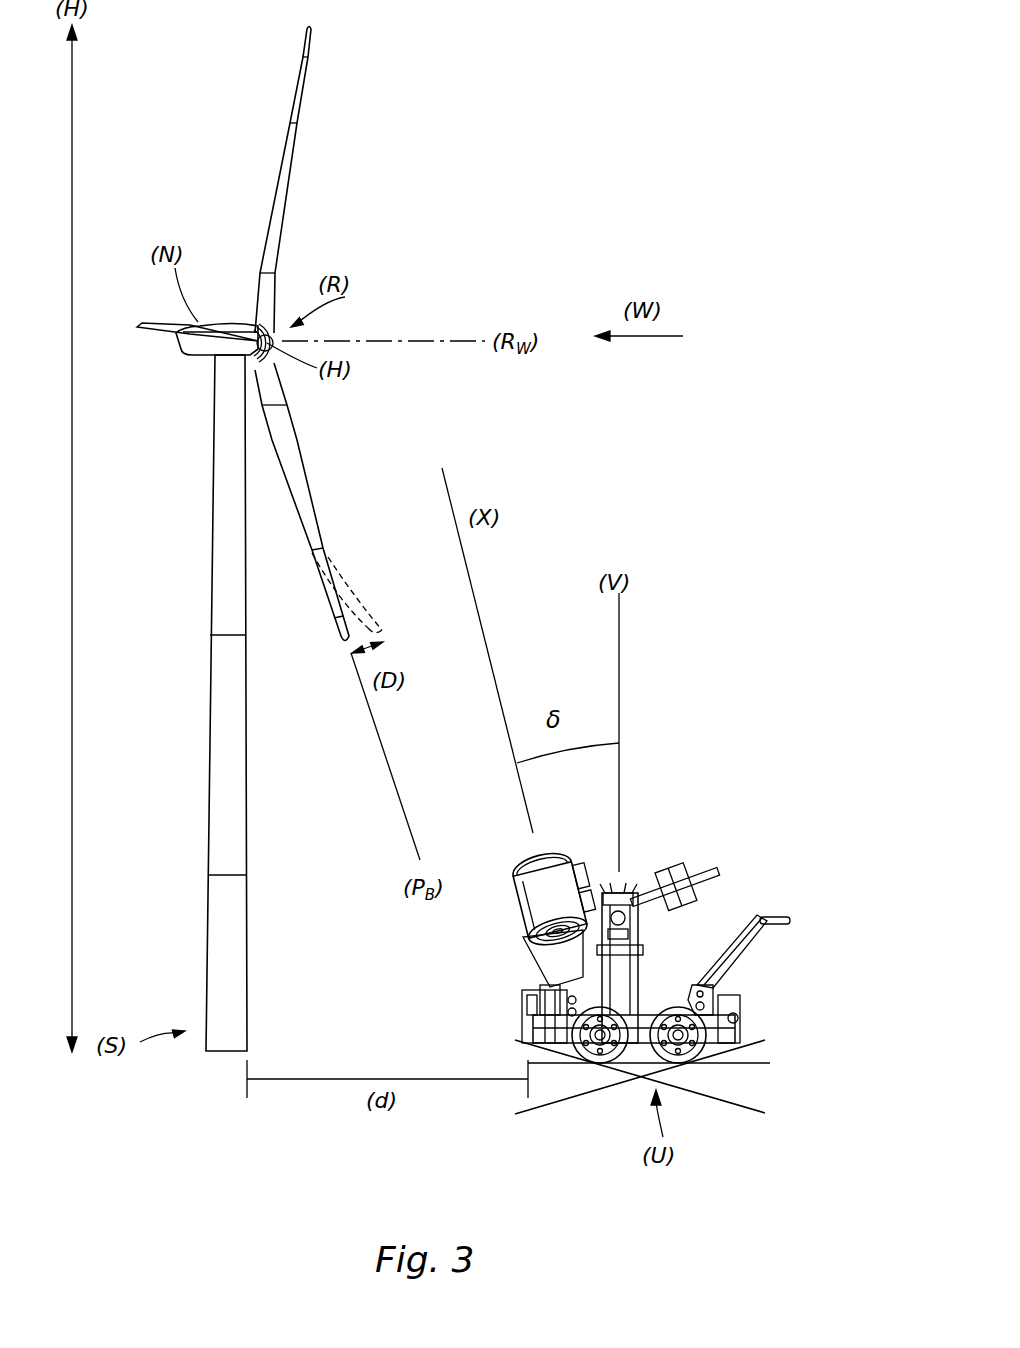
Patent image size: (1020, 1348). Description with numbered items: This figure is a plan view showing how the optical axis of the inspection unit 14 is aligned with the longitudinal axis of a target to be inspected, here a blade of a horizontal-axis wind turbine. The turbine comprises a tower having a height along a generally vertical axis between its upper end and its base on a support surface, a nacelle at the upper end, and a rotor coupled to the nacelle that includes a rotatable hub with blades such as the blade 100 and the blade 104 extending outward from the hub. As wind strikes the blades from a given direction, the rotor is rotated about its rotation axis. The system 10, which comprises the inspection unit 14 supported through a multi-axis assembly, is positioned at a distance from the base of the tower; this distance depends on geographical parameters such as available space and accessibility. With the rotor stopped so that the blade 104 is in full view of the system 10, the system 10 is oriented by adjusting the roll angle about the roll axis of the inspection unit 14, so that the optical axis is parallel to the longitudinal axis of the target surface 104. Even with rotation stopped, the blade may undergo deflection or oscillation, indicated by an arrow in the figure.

The blade 100 is at (293, 539).
The blade 104 is at (307, 473).
The system 10 is at (642, 940).
The inspection unit 14 is at (489, 933).